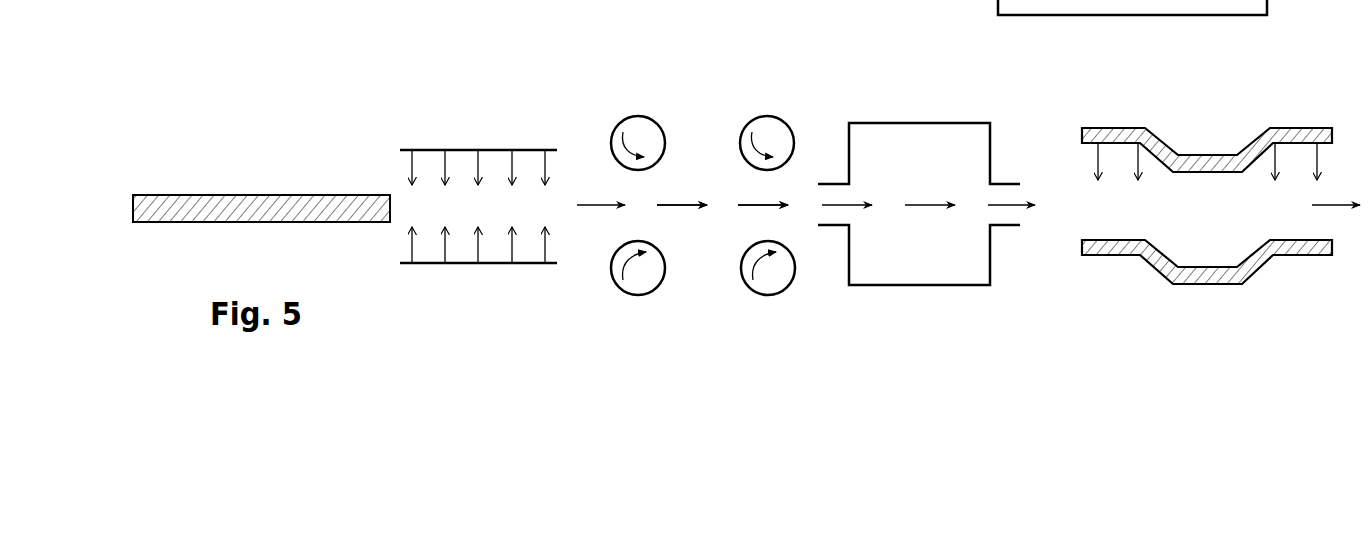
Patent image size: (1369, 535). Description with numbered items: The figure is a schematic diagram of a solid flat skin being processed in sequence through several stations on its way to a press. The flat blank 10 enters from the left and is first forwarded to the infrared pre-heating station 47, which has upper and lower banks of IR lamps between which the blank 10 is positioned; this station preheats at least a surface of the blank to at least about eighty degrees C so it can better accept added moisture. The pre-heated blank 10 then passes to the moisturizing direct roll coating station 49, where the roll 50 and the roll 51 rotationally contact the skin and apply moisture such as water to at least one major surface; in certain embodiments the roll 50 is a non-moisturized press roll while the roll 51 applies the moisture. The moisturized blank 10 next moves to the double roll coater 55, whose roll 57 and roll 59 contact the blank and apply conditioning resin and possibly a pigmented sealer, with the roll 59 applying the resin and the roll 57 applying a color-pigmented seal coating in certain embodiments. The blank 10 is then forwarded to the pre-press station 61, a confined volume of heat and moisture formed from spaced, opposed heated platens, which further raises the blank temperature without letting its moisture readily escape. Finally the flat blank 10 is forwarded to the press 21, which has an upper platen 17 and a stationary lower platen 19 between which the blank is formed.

The blank 10 is at (243, 195).
The infrared pre-heating station 47 is at (432, 148).
The roll 50 is at (638, 116).
The roll 51 is at (638, 296).
The double roll coater 55 is at (693, 105).
The roll 57 is at (767, 116).
The roll 59 is at (768, 296).
The moisturizing direct roll coating station 49 is at (795, 310).
The pre-press station 61 is at (912, 122).
The press 21 is at (1221, 189).
The upper platen 17 is at (1273, 128).
The stationary lower platen 19 is at (1300, 258).